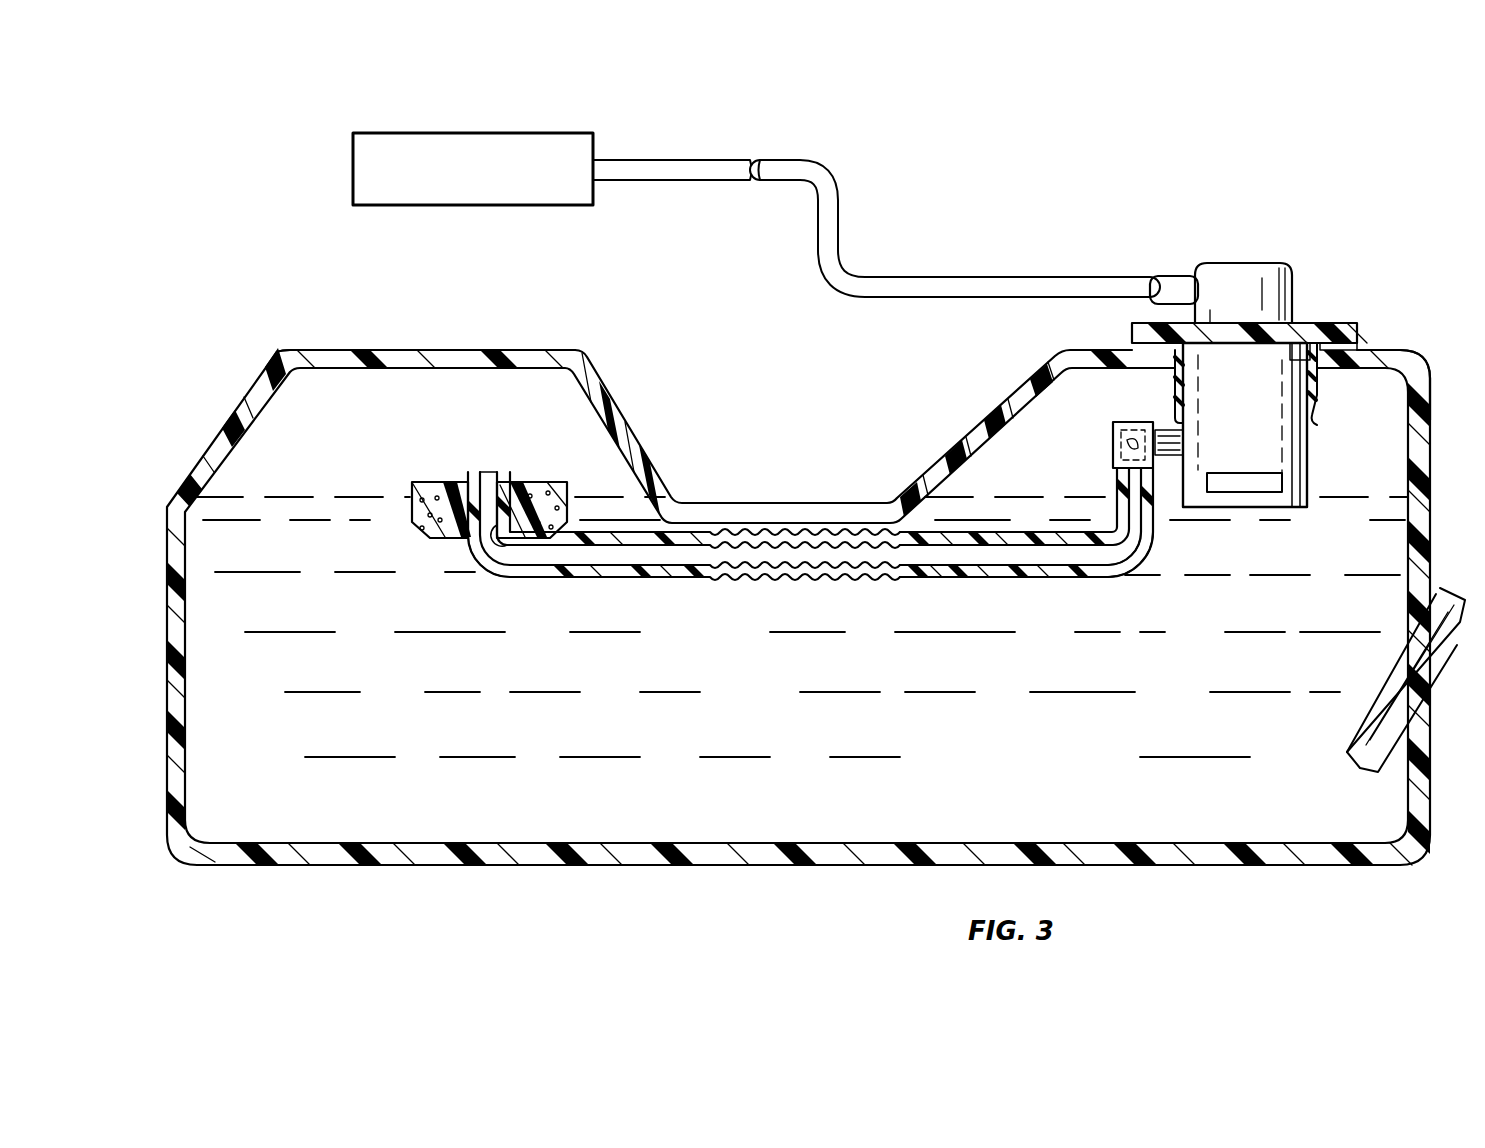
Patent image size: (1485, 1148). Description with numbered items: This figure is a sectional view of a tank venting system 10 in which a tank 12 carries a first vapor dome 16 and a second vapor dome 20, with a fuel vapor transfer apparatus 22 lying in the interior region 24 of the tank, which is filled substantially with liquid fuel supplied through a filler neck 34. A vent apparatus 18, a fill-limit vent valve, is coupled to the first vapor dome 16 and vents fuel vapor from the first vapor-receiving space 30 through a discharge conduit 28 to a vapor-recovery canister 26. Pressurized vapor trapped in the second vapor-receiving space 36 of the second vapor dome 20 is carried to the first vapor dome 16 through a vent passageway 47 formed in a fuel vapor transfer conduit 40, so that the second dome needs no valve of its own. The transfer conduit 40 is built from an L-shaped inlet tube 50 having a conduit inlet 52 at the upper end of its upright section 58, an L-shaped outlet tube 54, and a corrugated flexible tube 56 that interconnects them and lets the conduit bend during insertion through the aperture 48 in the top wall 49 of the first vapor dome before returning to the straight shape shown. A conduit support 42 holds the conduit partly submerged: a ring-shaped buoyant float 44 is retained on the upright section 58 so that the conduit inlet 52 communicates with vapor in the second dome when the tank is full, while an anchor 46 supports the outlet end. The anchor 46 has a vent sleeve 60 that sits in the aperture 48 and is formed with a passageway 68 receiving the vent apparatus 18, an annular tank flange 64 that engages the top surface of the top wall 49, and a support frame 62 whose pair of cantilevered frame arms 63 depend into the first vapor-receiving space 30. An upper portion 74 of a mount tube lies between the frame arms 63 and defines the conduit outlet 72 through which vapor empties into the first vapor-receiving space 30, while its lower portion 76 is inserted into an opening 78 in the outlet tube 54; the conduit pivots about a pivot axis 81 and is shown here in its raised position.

The tank venting system 10 is at (1345, 258).
The tank 12 is at (645, 887).
The first vapor dome 16 is at (1420, 350).
The vent apparatus 18 is at (1270, 255).
The second vapor dome 20 is at (262, 355).
The fuel vapor transfer apparatus 22 is at (917, 615).
The interior region 24 is at (1362, 608).
The vapor-recovery canister 26 is at (570, 205).
The discharge conduit 28 is at (858, 258).
The first vapor-receiving space 30 is at (1388, 425).
The filler neck 34 is at (1440, 640).
The second vapor-receiving space 36 is at (270, 440).
The fuel vapor transfer conduit 40 is at (810, 571).
The conduit support 42 is at (558, 465).
The buoyant float 44 is at (418, 490).
The anchor 46 is at (1337, 405).
The vent passageway 47 is at (482, 555).
The aperture 48 is at (1300, 360).
The top wall 49 is at (1372, 348).
The L-shaped inlet tube 50 is at (510, 572).
The conduit inlet 52 is at (497, 480).
The L-shaped outlet tube 54 is at (1110, 570).
The flexible tube 56 is at (812, 580).
The upright section 58 is at (465, 470).
The vent sleeve 60 is at (1315, 412).
The support frame 62 is at (1338, 390).
The frame arms 63 is at (1160, 443).
The annular tank flange 64 is at (1335, 337).
The passageway 68 is at (1185, 375).
The conduit outlet 72 is at (1135, 418).
The upper portion 74 is at (1113, 437).
The lower portion 76 is at (1135, 493).
The opening 78 is at (1140, 540).
The pivot axis 81 is at (1113, 453).